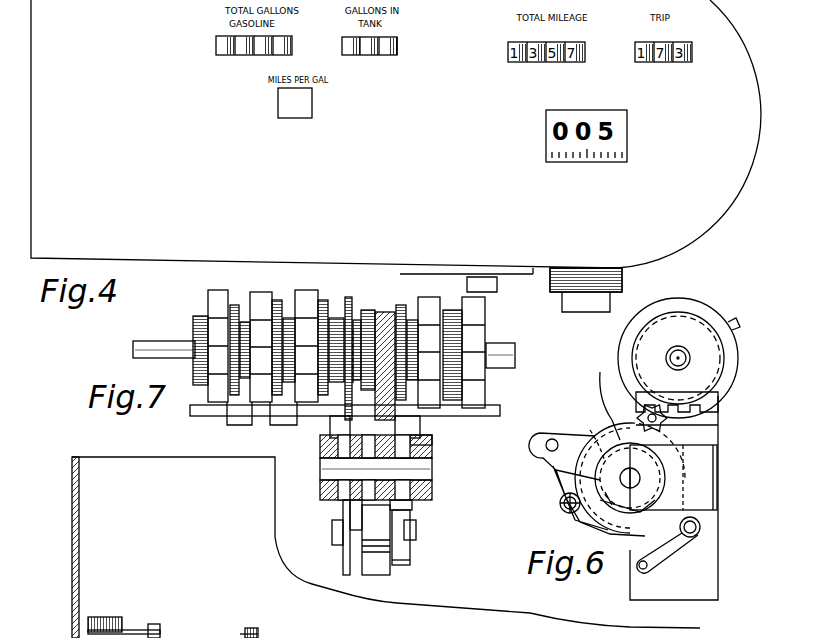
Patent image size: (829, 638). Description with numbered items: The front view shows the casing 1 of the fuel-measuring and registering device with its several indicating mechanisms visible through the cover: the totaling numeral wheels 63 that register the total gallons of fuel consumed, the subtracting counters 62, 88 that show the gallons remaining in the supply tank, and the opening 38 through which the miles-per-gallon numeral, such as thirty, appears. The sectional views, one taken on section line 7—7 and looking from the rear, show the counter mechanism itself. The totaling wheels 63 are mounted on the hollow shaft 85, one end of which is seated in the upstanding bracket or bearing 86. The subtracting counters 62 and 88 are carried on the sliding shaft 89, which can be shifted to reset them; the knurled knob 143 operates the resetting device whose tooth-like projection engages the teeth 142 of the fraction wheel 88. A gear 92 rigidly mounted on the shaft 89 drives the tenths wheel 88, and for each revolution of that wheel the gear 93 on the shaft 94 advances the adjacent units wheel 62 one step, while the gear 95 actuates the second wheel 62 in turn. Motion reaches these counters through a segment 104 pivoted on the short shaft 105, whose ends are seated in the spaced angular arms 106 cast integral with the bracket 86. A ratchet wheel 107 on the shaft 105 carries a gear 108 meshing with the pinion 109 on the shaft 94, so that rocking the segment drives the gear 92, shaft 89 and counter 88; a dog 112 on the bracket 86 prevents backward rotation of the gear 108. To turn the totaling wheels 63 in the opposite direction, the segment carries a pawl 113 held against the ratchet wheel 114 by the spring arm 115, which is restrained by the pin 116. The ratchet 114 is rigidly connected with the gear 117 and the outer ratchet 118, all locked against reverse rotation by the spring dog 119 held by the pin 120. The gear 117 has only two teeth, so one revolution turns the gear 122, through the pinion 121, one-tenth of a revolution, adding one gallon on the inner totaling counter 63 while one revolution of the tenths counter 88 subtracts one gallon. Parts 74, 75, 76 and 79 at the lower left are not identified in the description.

In FIG. 4, the instrument panel 1 is at (396, 137).
In FIG. 7, the instrument panel 1 is at (74, 545).
In FIG. 6, the pinion 7 is at (639, 481).
In FIG. 4, the opening 38 is at (290, 119).
In FIG. 4, the subtracting counter 62 is at (350, 56).
In FIG. 7, the subtracting counter 62 is at (288, 292).
In FIG. 4, the totaling numeral wheel 63 is at (221, 56).
In FIG. 7, the totaling numeral wheel 63 is at (486, 334).
In FIG. 6, the totaling numeral wheel 63 is at (703, 316).
In FIG. 7, the lever 74 is at (149, 631).
In FIG. 7, the pin 75 is at (232, 636).
In FIG. 7, the gear 76 is at (130, 628).
In FIG. 7, the bracket 79 is at (258, 630).
In FIG. 7, the shaft 85 is at (516, 348).
In FIG. 6, the shaft 85 is at (682, 350).
In FIG. 7, the upstanding bracket 86 is at (385, 314).
In FIG. 6, the upstanding bracket 86 is at (706, 574).
In FIG. 4, the fraction indicating subtracting wheel 88 is at (392, 56).
In FIG. 7, the fraction indicating subtracting wheel 88 is at (209, 296).
In FIG. 7, the sliding shaft 89 is at (168, 351).
In FIG. 7, the gear 92 is at (349, 285).
In FIG. 7, the gear 93 is at (240, 425).
In FIG. 7, the shaft 94 is at (206, 416).
In FIG. 7, the gear 95 is at (284, 425).
In FIG. 7, the segment 104 is at (333, 530).
In FIG. 6, the segment 104 is at (560, 478).
In FIG. 7, the short shaft 105 is at (432, 466).
In FIG. 6, the short shaft 105 is at (640, 480).
In FIG. 7, the angular arms 106 is at (330, 490).
In FIG. 6, the angular arms 106 is at (700, 478).
In FIG. 7, the ratchet wheel 107 is at (350, 508).
In FIG. 7, the gear 108 is at (330, 448).
In FIG. 7, the pinion 109 is at (330, 425).
In FIG. 7, the dog 112 is at (346, 548).
In FIG. 6, the pawl 113 is at (600, 518).
In FIG. 7, the ratchet wheel 114 is at (416, 525).
In FIG. 6, the ratchet wheel 114 is at (583, 442).
In FIG. 6, the spring arm 115 is at (560, 463).
In FIG. 6, the pin 116 is at (604, 440).
In FIG. 7, the driving gear 117 is at (432, 442).
In FIG. 6, the driving gear 117 is at (610, 363).
In FIG. 7, the outer ratchet 118 is at (412, 505).
In FIG. 6, the outer ratchet 118 is at (628, 472).
In FIG. 7, the spring dog 119 is at (410, 540).
In FIG. 6, the spring dog 119 is at (652, 540).
In FIG. 7, the pin 120 is at (410, 560).
In FIG. 6, the pin 120 is at (643, 565).
In FIG. 7, the pinion 121 is at (405, 420).
In FIG. 6, the pinion 121 is at (718, 426).
In FIG. 7, the gear 122 is at (425, 297).
In FIG. 6, the gear 122 is at (719, 400).
In FIG. 7, the teeth 142 is at (195, 328).
In FIG. 4, the knurled knob 143 is at (498, 269).